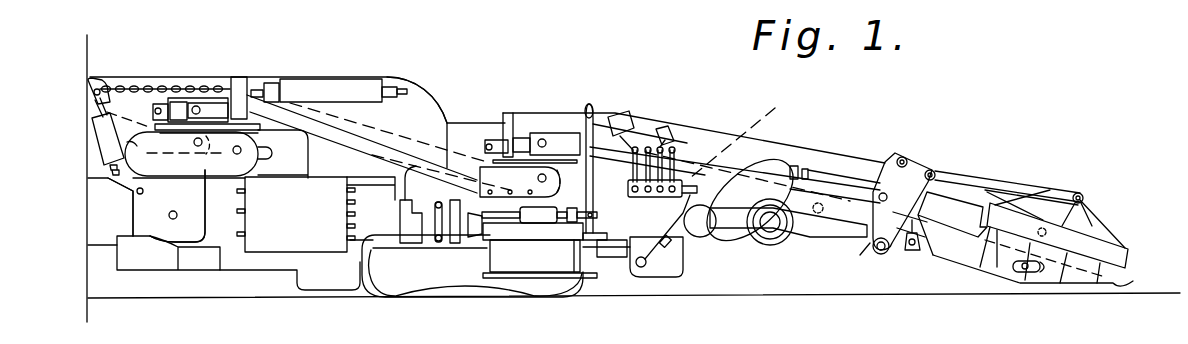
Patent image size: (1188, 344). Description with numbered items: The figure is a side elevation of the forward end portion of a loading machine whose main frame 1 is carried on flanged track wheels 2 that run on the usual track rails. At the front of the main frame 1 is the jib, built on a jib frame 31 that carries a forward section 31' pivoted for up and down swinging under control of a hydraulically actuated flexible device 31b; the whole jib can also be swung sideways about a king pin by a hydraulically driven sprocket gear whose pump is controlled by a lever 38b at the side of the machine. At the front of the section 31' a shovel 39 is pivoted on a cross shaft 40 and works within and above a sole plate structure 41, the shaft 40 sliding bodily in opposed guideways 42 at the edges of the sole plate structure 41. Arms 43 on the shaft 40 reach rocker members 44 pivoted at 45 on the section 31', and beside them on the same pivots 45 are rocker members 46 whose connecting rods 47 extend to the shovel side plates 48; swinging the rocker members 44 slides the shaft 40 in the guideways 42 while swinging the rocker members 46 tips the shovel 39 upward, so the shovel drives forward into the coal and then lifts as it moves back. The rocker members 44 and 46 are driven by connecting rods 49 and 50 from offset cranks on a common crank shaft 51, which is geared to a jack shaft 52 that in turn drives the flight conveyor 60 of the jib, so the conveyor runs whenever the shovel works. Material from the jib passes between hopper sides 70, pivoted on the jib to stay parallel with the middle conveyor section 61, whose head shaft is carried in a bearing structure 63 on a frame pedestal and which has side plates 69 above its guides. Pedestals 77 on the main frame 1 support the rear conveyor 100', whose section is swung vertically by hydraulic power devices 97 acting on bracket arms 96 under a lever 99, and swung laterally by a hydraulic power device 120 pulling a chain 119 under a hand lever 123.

The main frame 1 is at (273, 258).
The track wheels 2 is at (560, 298).
The jib frame 31 is at (788, 240).
The forward jib frame section 31' is at (850, 267).
The hydraulically actuated flexible device 31b is at (935, 237).
The lever 38b is at (640, 150).
The shovel 39 is at (1048, 256).
The cross shaft 40 is at (1055, 184).
The sole plate structure 41 is at (1053, 273).
The guideways 42 is at (1080, 240).
The arms 43 is at (908, 173).
The rocker members 44 is at (882, 160).
The pivots 45 is at (887, 253).
The rocker members 46 is at (968, 176).
The connecting rods 47 is at (1013, 182).
The shovel side plates 48 is at (1093, 200).
The connecting rod 49 is at (807, 180).
The connecting rod 50 is at (833, 187).
The crank shaft 51 is at (770, 246).
The jack shaft 52 is at (700, 238).
The flight conveyor 60 is at (737, 135).
The middle conveyor section 61 is at (418, 142).
The bearing structure 63 is at (118, 110).
The side plates 69 is at (417, 105).
The hopper sides 70 is at (463, 130).
The pedestals 77 is at (177, 237).
The bracket arms 96 is at (90, 87).
The hydraulic power devices 97 is at (105, 152).
The lever 99 is at (665, 147).
The rear conveyor 100' is at (75, 184).
The chain 119 is at (147, 90).
The hydraulic power device 120 is at (350, 87).
The hand lever 123 is at (606, 124).